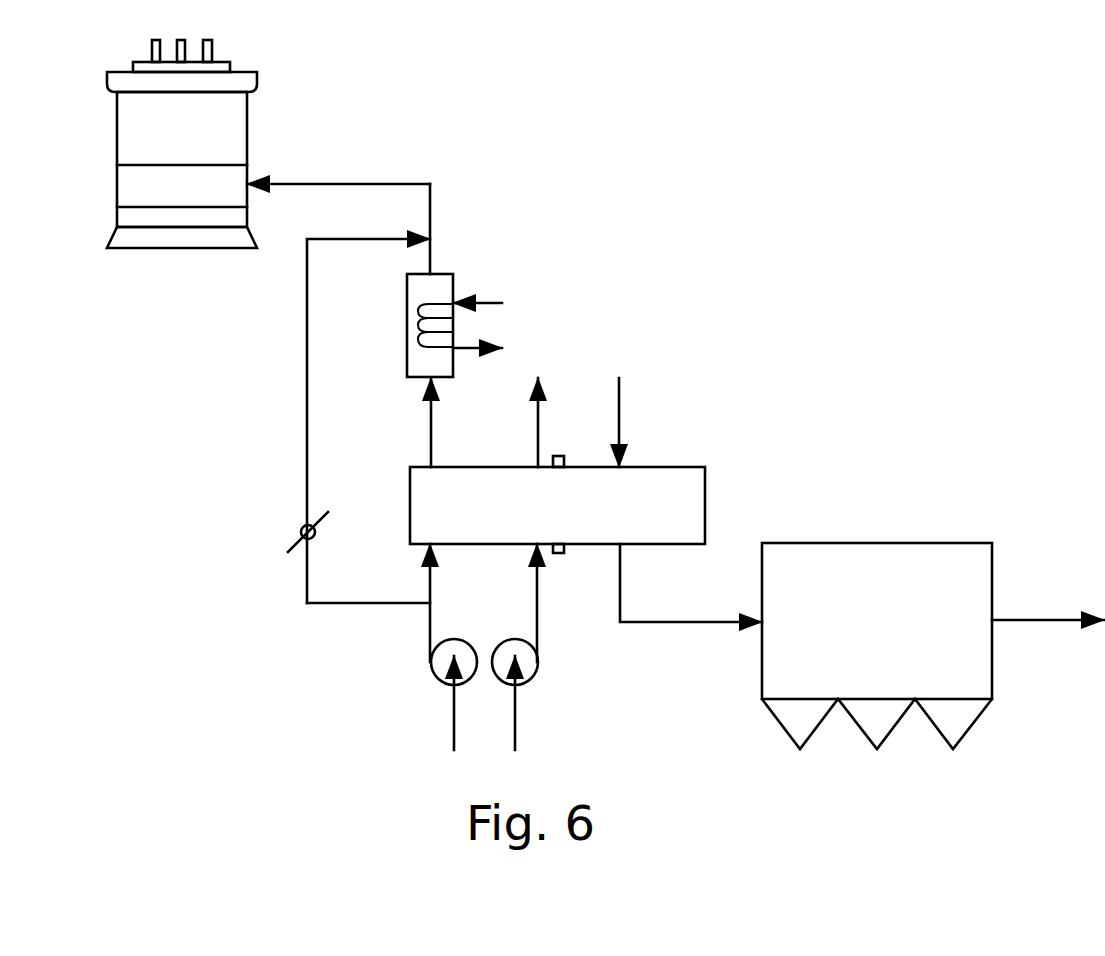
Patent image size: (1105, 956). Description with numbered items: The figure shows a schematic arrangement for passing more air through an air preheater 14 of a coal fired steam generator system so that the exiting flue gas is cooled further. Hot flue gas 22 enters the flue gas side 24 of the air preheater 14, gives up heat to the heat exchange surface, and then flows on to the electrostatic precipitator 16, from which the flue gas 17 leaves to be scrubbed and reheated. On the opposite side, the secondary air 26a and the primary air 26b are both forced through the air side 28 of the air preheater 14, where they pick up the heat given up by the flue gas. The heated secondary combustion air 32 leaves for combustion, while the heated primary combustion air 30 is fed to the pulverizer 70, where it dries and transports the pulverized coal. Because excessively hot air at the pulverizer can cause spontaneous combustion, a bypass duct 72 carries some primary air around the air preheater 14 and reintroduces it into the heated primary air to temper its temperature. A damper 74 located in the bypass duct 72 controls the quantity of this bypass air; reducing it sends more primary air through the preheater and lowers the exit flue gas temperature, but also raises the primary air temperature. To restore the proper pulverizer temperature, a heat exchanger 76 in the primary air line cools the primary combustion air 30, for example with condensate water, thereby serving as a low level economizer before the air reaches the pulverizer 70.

The air preheater 14 is at (665, 520).
The electrostatic precipitator 16 is at (876, 556).
The flue gas 17 is at (1013, 620).
The flue gas 22 is at (619, 432).
The flue gas side 24 is at (668, 490).
The secondary air 26a is at (515, 728).
The primary air 26b is at (454, 728).
The air side 28 is at (421, 490).
The primary combustion air 30 is at (431, 432).
The secondary combustion air 32 is at (538, 432).
The pulverizer 70 is at (247, 130).
The bypass duct 72 is at (308, 470).
The damper 74 is at (301, 527).
The heat exchanger 76 is at (445, 275).